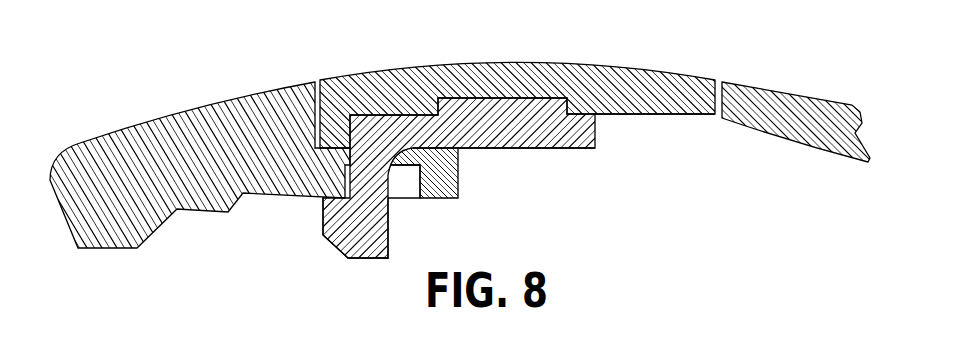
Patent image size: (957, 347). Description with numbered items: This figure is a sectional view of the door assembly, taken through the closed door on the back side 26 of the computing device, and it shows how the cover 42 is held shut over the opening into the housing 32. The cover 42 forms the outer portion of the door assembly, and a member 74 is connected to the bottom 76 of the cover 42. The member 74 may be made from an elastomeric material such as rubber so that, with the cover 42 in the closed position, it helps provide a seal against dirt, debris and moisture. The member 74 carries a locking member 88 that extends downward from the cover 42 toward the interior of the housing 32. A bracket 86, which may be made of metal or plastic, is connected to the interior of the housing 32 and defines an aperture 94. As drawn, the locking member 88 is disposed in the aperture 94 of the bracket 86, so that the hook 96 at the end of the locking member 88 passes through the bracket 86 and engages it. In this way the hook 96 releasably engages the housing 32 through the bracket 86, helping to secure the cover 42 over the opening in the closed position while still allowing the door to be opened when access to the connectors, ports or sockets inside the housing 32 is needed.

The back side 26 is at (184, 112).
The cover 42 is at (517, 63).
The housing 32 is at (805, 92).
The locking member 88 is at (378, 128).
The bottom 76 is at (660, 114).
The member 74 is at (557, 149).
The bracket 86 is at (458, 178).
The aperture 94 is at (416, 183).
The hook 96 is at (322, 228).